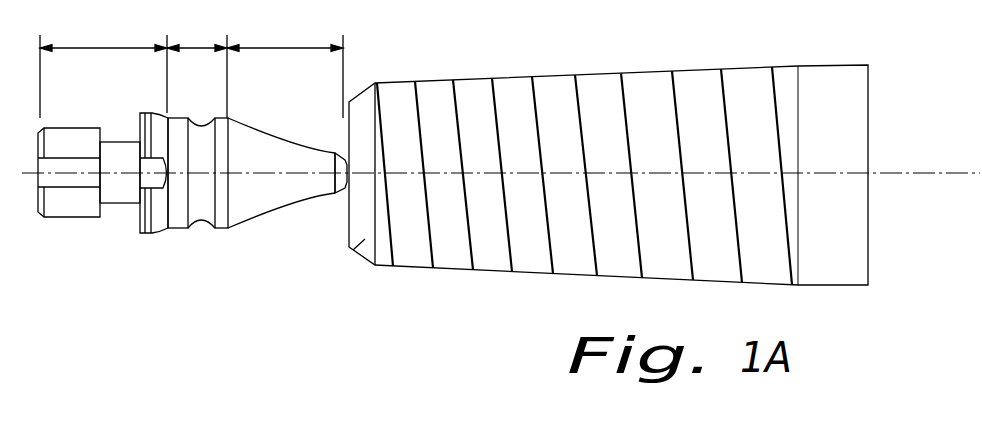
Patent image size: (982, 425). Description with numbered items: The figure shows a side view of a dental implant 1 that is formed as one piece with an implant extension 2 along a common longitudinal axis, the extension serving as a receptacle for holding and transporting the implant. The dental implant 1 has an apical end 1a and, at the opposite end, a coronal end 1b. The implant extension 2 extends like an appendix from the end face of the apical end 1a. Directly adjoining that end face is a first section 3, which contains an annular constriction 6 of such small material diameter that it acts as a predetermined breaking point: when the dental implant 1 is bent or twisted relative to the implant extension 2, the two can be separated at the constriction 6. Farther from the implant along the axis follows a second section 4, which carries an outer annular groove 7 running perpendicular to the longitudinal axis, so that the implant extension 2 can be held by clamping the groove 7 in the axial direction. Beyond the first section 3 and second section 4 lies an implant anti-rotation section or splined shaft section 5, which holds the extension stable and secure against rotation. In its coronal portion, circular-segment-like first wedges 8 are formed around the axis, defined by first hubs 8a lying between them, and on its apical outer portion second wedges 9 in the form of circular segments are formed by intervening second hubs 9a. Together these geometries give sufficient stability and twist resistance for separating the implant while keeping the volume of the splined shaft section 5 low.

The dental implant 1 is at (530, 287).
The apical end 1a is at (353, 252).
The coronal end 1b is at (847, 247).
The implant extension 2 is at (141, 260).
The first section 3 is at (285, 65).
The second section 4 is at (197, 65).
The implant anti-rotation section or splined shaft section 5 is at (103, 65).
The annular constriction 6 is at (340, 200).
The outer annular groove 7 is at (200, 220).
The first wedges 8 is at (160, 213).
The first hubs 8a is at (147, 178).
The second wedges 9 is at (72, 198).
The second hubs 9a is at (63, 165).